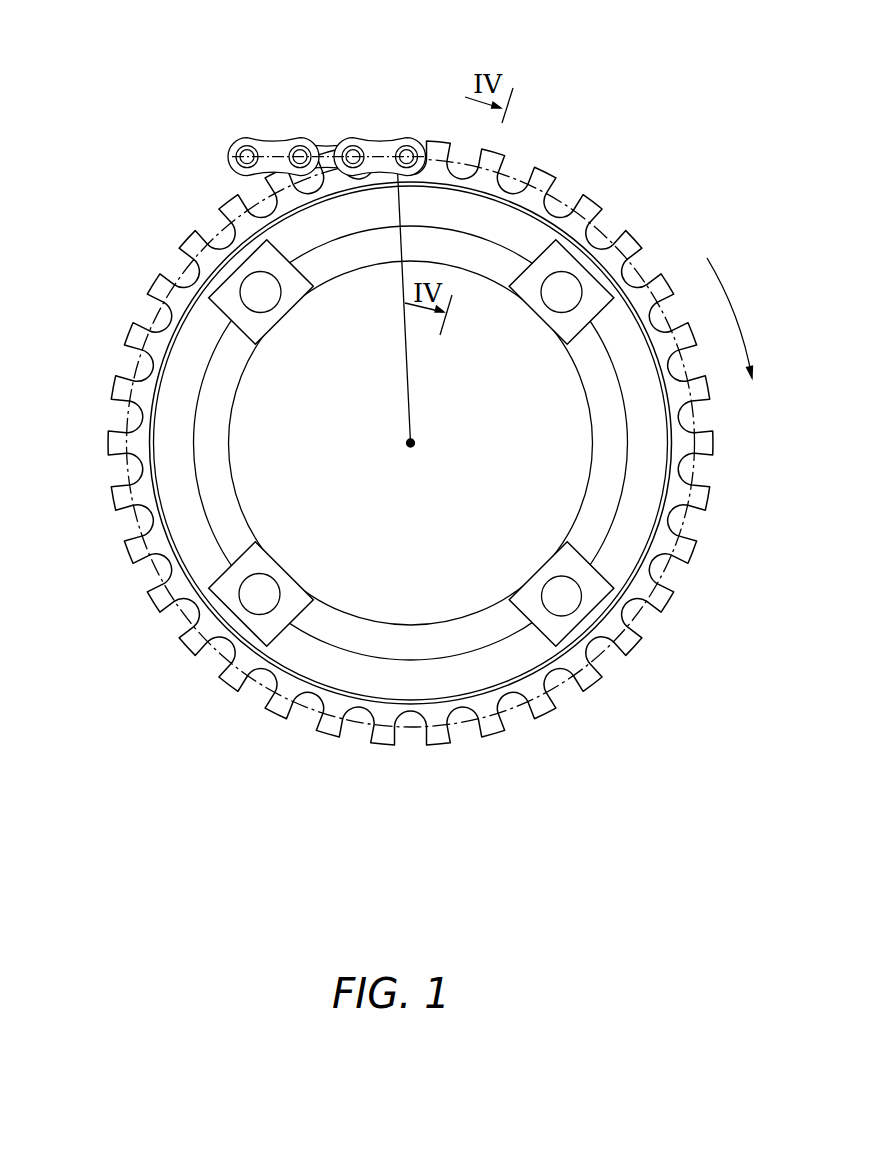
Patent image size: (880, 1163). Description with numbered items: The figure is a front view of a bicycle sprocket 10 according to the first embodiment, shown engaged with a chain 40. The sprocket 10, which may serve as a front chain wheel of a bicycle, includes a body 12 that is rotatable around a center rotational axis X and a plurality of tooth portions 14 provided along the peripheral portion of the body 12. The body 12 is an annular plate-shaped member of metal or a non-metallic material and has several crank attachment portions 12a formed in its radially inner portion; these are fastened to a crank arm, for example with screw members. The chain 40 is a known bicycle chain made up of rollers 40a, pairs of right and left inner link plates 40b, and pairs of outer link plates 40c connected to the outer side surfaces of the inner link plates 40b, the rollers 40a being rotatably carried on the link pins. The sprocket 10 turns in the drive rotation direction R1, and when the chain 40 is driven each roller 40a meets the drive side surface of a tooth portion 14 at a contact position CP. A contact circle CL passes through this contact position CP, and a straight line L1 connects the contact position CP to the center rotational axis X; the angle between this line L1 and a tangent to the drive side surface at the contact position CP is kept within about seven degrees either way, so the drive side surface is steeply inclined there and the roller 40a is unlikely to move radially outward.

The sprocket 10 is at (373, 422).
The body 12 is at (411, 443).
The crank attachment portions 12a is at (253, 294).
The tooth portion 14 is at (178, 236).
The chain 40 is at (296, 93).
The rollers 40a is at (380, 129).
The inner link plates 40b is at (325, 142).
The outer link plates 40c is at (275, 141).
The contact circle CL is at (560, 193).
The contact position CP is at (373, 140).
The straight line L1 is at (406, 382).
The center rotational axis X is at (412, 440).
The drive rotation direction R1 is at (739, 318).